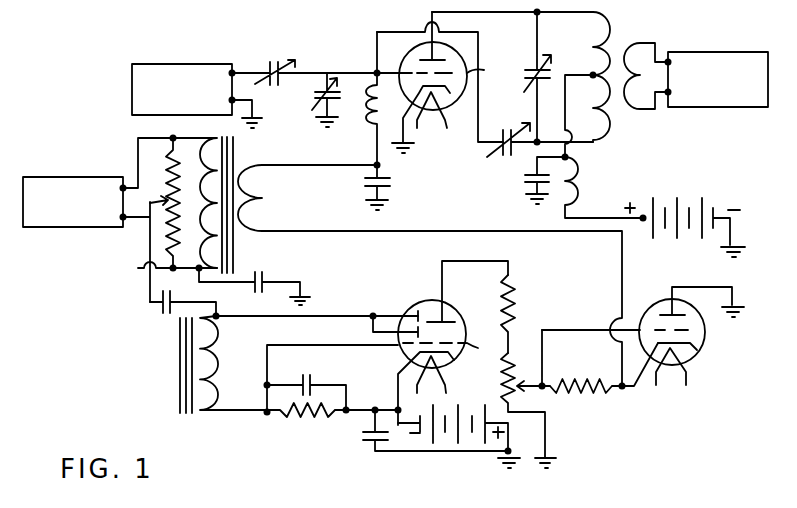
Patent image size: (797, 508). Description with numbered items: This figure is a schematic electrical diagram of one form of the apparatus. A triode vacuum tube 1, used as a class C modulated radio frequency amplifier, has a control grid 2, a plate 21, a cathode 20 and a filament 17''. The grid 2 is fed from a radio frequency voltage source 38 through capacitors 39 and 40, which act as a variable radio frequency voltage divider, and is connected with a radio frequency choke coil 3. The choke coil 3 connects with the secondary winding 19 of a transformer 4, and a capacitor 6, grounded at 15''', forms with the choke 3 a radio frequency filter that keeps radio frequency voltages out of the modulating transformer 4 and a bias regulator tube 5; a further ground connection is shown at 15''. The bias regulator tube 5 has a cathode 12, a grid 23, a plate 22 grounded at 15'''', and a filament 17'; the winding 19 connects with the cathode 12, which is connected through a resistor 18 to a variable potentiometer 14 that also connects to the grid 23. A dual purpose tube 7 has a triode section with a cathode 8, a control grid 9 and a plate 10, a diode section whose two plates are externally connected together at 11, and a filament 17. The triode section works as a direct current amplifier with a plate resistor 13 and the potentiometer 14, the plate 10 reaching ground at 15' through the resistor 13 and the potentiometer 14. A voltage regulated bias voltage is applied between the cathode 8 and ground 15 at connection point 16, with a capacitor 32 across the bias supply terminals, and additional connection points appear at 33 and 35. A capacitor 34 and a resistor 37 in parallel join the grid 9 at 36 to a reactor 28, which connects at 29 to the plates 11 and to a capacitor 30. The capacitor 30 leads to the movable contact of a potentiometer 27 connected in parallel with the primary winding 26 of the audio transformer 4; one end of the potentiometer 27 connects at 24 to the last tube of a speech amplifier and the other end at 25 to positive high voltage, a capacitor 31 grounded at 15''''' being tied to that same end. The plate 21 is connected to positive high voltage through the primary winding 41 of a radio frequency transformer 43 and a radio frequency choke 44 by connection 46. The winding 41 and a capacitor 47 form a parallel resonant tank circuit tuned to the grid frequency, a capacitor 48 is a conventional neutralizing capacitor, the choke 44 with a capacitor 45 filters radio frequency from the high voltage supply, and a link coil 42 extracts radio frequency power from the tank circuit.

The triode type vacuum tube 1 is at (438, 72).
The control grid 2 is at (400, 62).
The radio frequency choke coil 3 is at (372, 122).
The transformer 4 is at (238, 146).
The bias regulator tube 5 is at (697, 330).
The capacitor 6 is at (365, 180).
The dual purpose type vacuum tube 7 is at (431, 302).
The cathode 8 is at (408, 352).
The control grid 9 is at (445, 350).
The plate 10 is at (446, 316).
The two plates 11 is at (412, 316).
The cathode 12 is at (698, 345).
The plate resistor 13 is at (514, 284).
The variable potentiometer 14 is at (516, 376).
The ground 15 is at (506, 477).
The ground 15' is at (570, 464).
The ground 15'' is at (418, 172).
The ground 15''' is at (402, 206).
The ground 15'''' is at (751, 293).
The ground 15''''' is at (328, 287).
The connection point 16 is at (398, 428).
The filament 17 is at (452, 375).
The filament 17' is at (700, 370).
The filament 17'' is at (449, 117).
The resistor 18 is at (591, 388).
The secondary winding 19 is at (252, 200).
The cathode 20 is at (403, 128).
The plate 21 is at (425, 56).
The plate 22 is at (668, 310).
The grid 23 is at (660, 318).
The connection 24 is at (124, 186).
The connection 25 is at (175, 267).
The primary winding 26 is at (208, 165).
The potentiometer 27 is at (166, 182).
The reactor 28 is at (178, 358).
The connection 29 is at (222, 325).
The capacitor 30 is at (158, 308).
The capacitor 31 is at (262, 278).
The capacitor 32 is at (372, 444).
The junction 33 is at (373, 413).
The capacitor 34 is at (306, 378).
The junction 35 is at (348, 407).
The connection 36 is at (265, 413).
The resistor 37 is at (320, 415).
The R.F. voltage source 38 is at (234, 70).
The capacitor 39 is at (272, 64).
The capacitor 40 is at (312, 95).
The primary winding 41 is at (593, 42).
The link coil 42 is at (642, 110).
The radio frequency transformer 43 is at (615, 55).
The R.F. choke 44 is at (578, 186).
The capacitor 45 is at (524, 180).
The connection 46 is at (645, 214).
The capacitor 47 is at (526, 62).
The neutralizing capacitor 48 is at (497, 150).